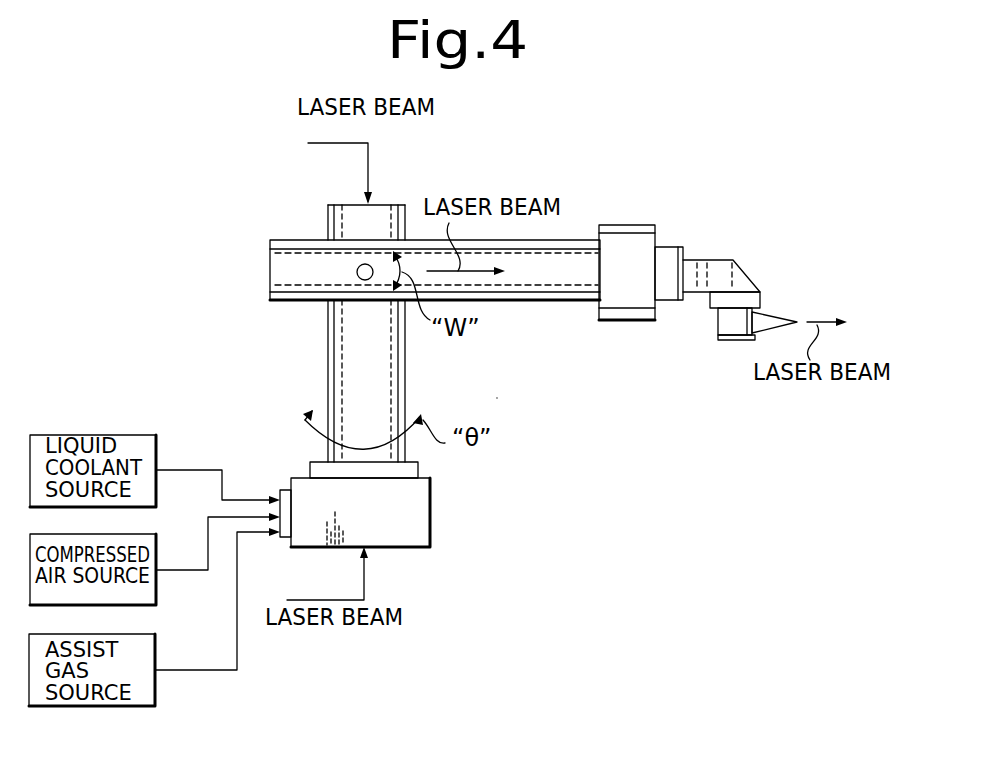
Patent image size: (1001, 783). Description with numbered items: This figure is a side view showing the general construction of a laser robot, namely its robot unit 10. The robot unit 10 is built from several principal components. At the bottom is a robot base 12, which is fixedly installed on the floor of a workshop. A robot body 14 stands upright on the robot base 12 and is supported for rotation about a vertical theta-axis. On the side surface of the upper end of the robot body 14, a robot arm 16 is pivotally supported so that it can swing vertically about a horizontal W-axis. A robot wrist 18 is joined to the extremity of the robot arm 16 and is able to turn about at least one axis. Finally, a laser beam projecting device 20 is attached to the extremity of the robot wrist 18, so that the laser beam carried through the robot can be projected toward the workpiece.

The robot unit 10 is at (500, 399).
The robot base 12 is at (430, 510).
The robot body 14 is at (392, 377).
The robot arm 16 is at (582, 248).
The robot wrist 18 is at (642, 227).
The laser beam projecting device 20 is at (768, 318).